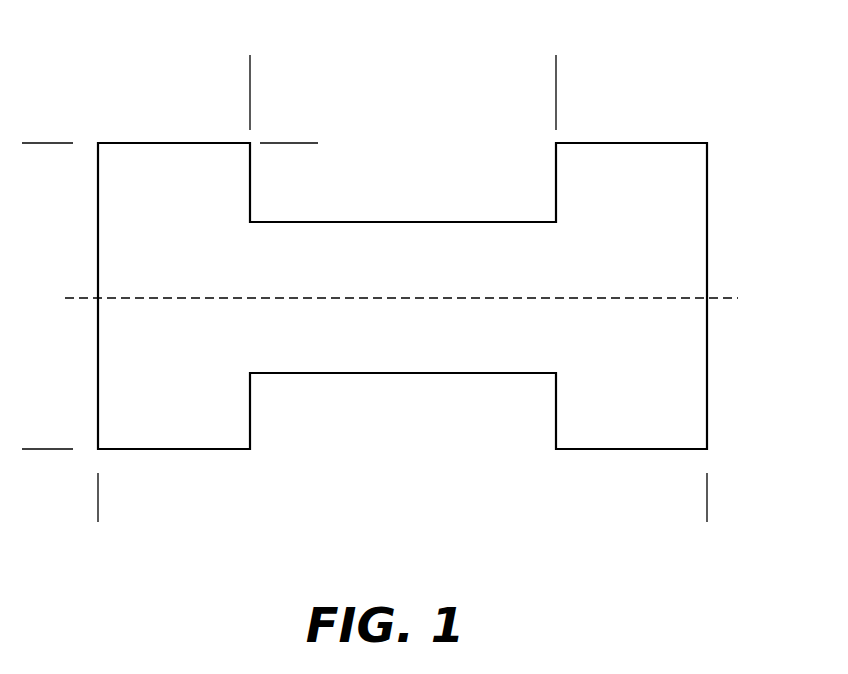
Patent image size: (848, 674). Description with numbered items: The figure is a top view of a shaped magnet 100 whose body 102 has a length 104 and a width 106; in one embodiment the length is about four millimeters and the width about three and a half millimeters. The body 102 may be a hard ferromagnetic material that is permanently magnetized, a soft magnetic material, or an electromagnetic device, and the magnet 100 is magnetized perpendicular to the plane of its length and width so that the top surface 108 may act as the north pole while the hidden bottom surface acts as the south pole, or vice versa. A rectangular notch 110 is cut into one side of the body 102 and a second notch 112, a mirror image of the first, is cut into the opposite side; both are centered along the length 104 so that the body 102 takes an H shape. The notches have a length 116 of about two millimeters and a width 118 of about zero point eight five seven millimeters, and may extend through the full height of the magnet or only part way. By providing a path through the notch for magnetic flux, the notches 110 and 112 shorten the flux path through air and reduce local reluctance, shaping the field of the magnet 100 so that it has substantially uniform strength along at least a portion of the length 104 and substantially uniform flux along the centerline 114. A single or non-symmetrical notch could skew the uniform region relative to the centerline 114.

The magnet 100 is at (750, 132).
The body 102 is at (385, 336).
The length 104 is at (98, 507).
The width 106 is at (39, 143).
The top surface 108 is at (642, 162).
The notch 110 is at (426, 156).
The second notch 112 is at (446, 420).
The centerline 114 is at (722, 303).
The length of notches 116 is at (556, 73).
The width of notches 118 is at (289, 143).